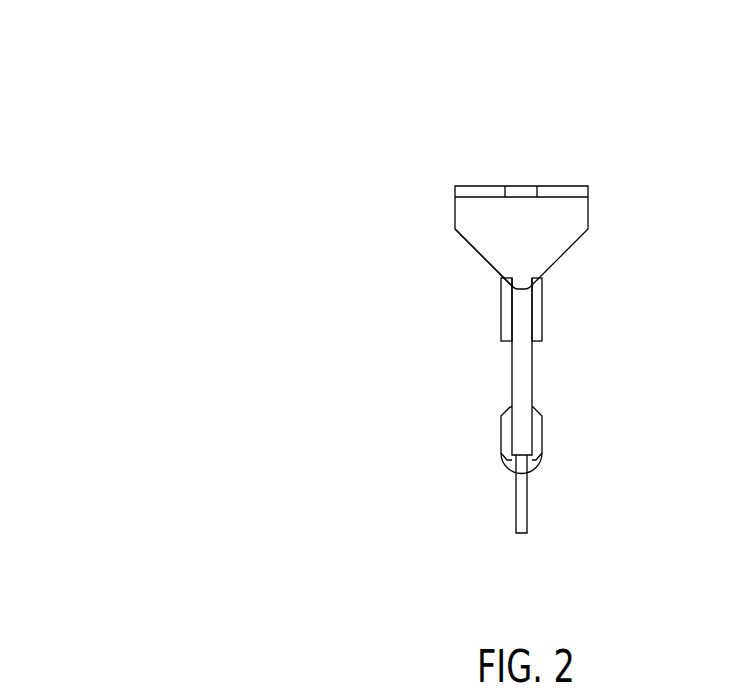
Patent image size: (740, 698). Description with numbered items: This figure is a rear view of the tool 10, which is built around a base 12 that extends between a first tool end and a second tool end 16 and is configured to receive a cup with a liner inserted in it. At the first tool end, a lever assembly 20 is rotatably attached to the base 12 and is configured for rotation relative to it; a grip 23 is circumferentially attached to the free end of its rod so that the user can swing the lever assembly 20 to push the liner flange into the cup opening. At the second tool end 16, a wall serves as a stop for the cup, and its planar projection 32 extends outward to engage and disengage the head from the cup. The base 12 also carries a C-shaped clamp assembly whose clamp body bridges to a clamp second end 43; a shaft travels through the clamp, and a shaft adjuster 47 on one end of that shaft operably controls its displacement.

The tool 10 is at (123, 186).
The base 12 is at (588, 229).
The second tool end 16 is at (478, 223).
The lever assembly 20 is at (486, 471).
The grip 23 is at (537, 467).
The planar projection 32 is at (568, 191).
The clamp second end 43 is at (532, 388).
The shaft adjuster 47 is at (527, 533).